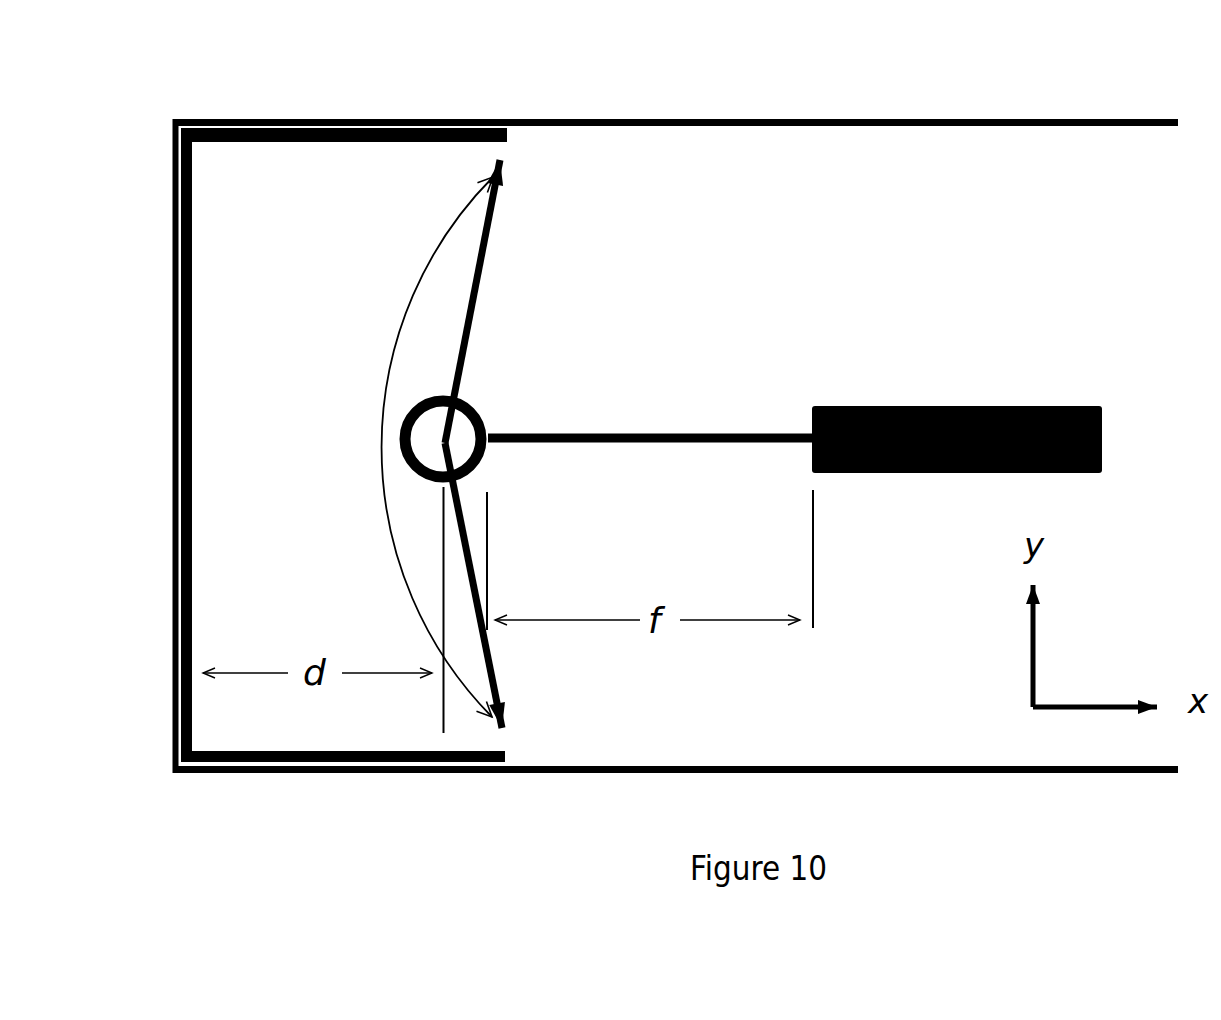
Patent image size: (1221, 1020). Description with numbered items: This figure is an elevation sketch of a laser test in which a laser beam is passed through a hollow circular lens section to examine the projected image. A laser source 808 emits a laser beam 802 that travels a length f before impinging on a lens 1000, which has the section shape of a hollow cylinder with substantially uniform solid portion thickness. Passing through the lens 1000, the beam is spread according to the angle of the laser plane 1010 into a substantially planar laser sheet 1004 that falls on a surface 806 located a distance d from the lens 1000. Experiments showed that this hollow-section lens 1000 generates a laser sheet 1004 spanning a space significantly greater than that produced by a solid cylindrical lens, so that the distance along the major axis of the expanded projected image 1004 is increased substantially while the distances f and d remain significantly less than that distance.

The surface 806 is at (173, 175).
The substantially planar laser sheet 1004 is at (248, 140).
The laser plane 1010 is at (380, 481).
The lens 1000 is at (458, 432).
The laser beam 802 is at (635, 433).
The laser source 808 is at (943, 405).